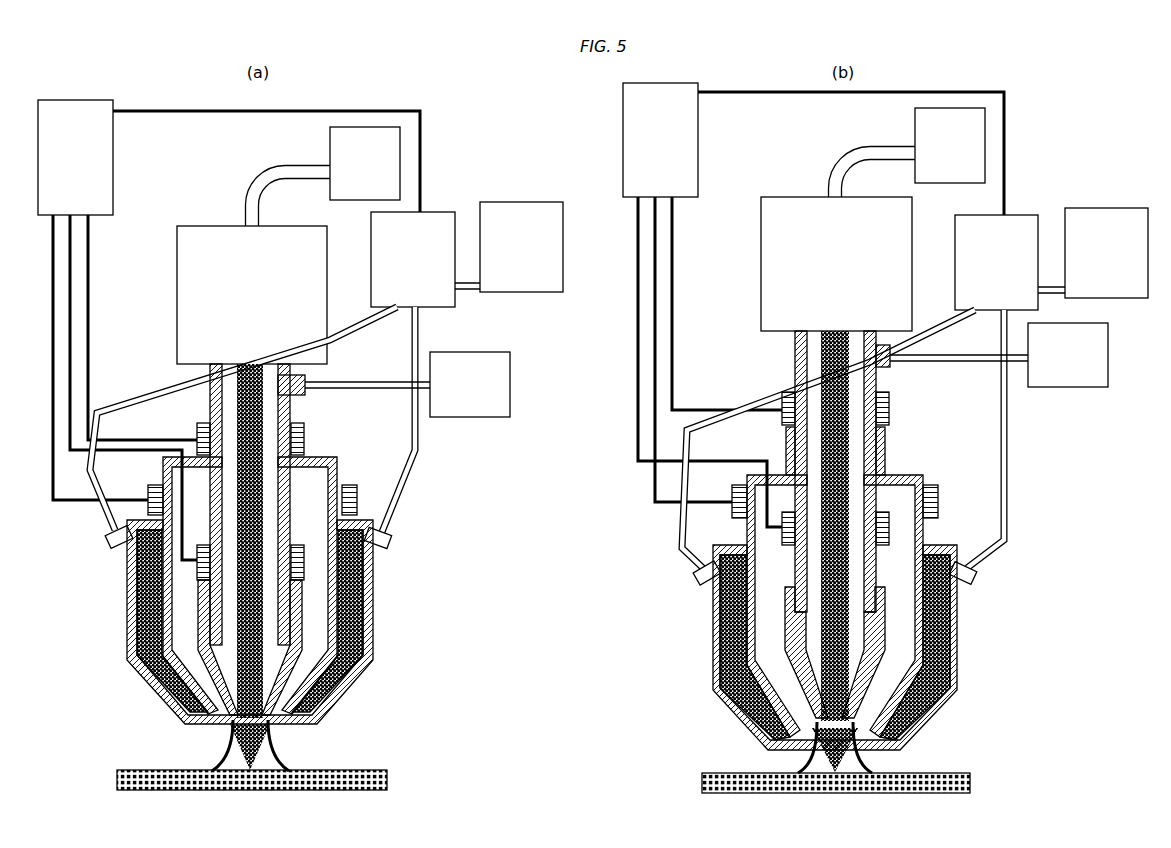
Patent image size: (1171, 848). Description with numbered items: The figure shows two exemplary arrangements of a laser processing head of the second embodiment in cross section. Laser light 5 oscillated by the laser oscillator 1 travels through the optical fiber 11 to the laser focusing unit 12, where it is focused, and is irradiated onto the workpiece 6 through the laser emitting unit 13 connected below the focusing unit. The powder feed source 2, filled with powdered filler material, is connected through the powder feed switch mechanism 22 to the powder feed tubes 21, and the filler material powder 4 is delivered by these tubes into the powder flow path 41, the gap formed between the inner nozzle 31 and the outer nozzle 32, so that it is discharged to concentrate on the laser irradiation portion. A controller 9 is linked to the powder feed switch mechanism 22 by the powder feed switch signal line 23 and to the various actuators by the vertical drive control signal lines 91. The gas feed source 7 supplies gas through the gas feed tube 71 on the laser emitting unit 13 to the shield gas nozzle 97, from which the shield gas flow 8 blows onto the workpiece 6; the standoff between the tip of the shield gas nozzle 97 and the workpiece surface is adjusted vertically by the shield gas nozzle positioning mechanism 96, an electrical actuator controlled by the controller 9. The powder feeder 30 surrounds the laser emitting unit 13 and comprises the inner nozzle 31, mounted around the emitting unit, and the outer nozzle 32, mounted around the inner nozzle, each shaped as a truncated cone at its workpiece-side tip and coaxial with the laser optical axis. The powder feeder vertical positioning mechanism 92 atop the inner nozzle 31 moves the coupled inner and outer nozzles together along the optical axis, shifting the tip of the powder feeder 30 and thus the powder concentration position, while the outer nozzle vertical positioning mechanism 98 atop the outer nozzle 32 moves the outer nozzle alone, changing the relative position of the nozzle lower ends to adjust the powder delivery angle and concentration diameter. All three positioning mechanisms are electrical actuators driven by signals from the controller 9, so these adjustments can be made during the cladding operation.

The laser oscillator 1 is at (330, 141).
The powder feed source 2 is at (525, 202).
The filler material powder 4 is at (283, 735).
The laser light 5 is at (248, 604).
The workpiece 6 is at (117, 775).
The gas feed source 7 is at (510, 384).
The shield gas flow 8 is at (222, 760).
The controller 9 is at (113, 152).
The optical fiber 11 is at (249, 190).
The laser focusing unit 12 is at (180, 246).
The laser emitting unit 13 is at (291, 410).
The powder feed tubes 21 is at (345, 332).
The powder feed switch mechanism 22 is at (429, 211).
The powder feed switch signal line 23 is at (421, 134).
The powder feeder 30 is at (547, 540).
The inner nozzle 31 is at (342, 465).
The outer nozzle 32 is at (372, 592).
The powder flow path 41 is at (146, 635).
The gas feed tube 71 is at (389, 382).
The vertical drive control signal lines 91 is at (60, 292).
The powder feeder vertical positioning mechanism 92 is at (305, 438).
The shield gas nozzle positioning mechanism 96 is at (305, 566).
The shield gas nozzle 97 is at (297, 622).
The outer nozzle vertical positioning mechanism 98 is at (357, 498).